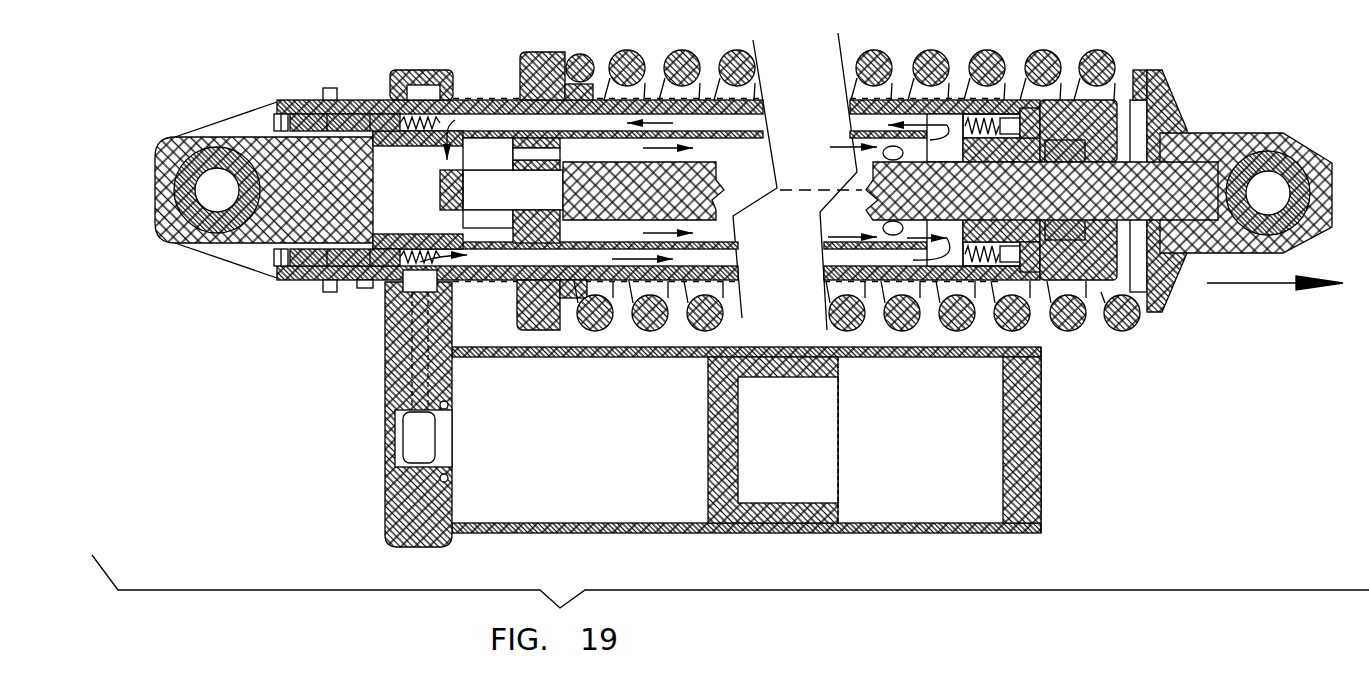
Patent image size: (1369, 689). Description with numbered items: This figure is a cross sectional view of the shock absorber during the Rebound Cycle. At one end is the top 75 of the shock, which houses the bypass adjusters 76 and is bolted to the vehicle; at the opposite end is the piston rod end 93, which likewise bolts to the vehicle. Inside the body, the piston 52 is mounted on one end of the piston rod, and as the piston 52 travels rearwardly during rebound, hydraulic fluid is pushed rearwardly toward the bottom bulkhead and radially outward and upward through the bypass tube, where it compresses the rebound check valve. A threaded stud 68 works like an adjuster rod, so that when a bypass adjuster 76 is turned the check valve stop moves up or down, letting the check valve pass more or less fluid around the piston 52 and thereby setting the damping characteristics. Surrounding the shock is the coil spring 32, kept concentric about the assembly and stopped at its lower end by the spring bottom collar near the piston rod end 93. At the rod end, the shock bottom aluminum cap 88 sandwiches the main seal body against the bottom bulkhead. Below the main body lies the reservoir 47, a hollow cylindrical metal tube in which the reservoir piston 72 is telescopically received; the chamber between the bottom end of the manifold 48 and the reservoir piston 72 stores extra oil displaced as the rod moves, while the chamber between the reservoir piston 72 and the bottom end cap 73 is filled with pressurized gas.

The coil spring 32 is at (627, 52).
The reservoir 47 is at (607, 535).
The manifold 48 is at (385, 365).
The piston 52 is at (517, 223).
The threaded stud 68 is at (347, 110).
The reservoir piston 72 is at (720, 438).
The bottom end cap 73 is at (1043, 437).
The top 75 is at (157, 180).
The bypass adjuster 76 is at (273, 125).
The bottom cap 88 is at (1097, 265).
The piston rod end 93 is at (1232, 133).